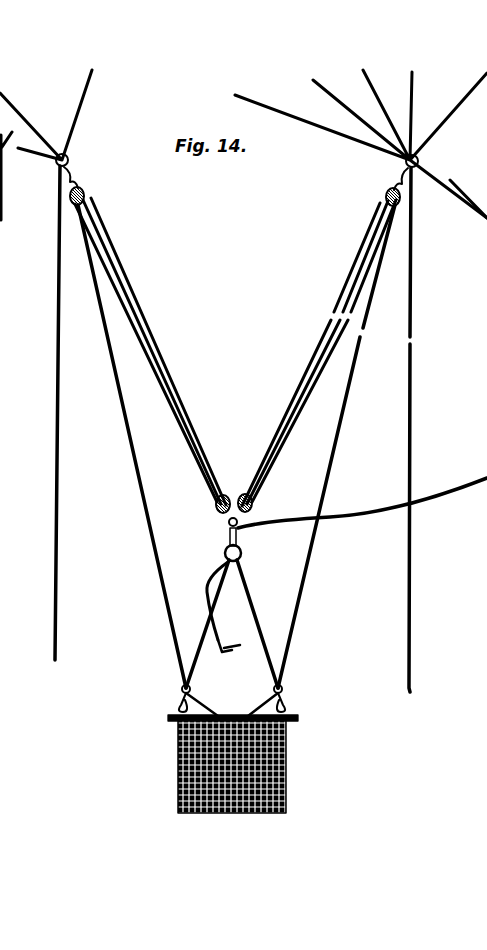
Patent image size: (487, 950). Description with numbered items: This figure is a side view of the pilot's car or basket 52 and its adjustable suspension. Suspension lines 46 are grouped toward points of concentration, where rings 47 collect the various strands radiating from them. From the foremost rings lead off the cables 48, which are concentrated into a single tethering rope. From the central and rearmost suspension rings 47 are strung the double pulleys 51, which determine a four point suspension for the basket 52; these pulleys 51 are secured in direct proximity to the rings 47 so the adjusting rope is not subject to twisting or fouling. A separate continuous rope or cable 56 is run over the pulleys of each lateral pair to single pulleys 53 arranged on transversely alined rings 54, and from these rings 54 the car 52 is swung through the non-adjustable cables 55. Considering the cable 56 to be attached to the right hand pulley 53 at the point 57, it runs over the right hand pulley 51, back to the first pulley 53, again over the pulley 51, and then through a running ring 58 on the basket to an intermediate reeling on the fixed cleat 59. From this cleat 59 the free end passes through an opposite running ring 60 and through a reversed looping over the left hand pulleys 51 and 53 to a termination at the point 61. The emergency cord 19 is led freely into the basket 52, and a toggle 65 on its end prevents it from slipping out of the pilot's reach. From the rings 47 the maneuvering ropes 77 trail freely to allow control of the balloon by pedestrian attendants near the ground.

The emergency cord 19 is at (472, 483).
The suspension lines 46 is at (57, 115).
The rings 47 is at (70, 160).
The cables 48 is at (460, 194).
The double pulleys 51 is at (88, 196).
The basket 52 is at (178, 752).
The single pulleys 53 is at (229, 523).
The rings 54 is at (240, 540).
The non-adjustable cables 55 is at (226, 598).
The rope or cable 56 is at (343, 413).
The point 57 is at (256, 506).
The running ring 58 is at (285, 690).
The fixed cleat 59 is at (244, 717).
The running ring 60 is at (182, 690).
The point 61 is at (217, 508).
The toggle 65 is at (223, 660).
The maneuvering ropes 77 is at (56, 488).